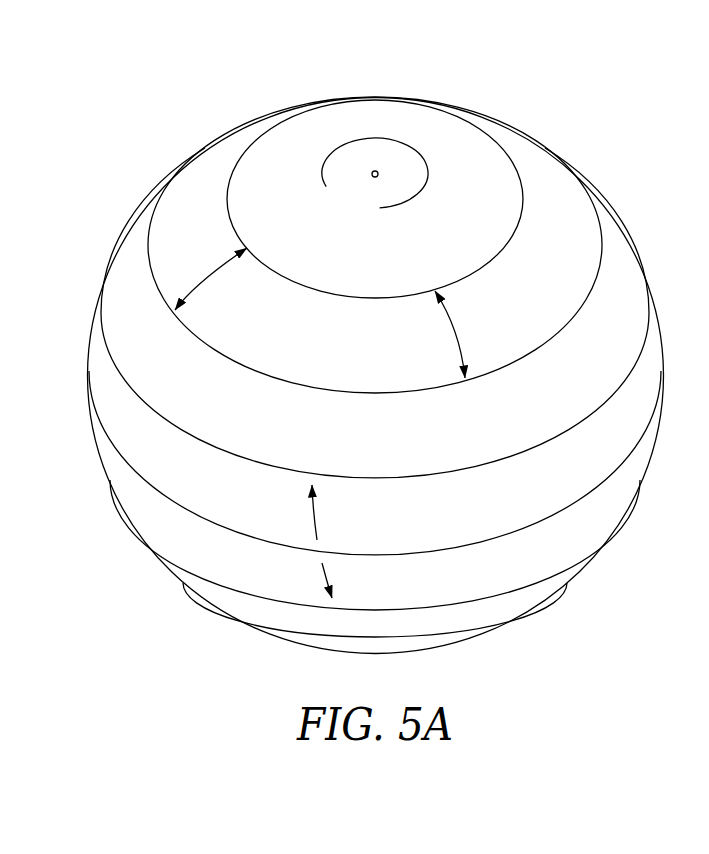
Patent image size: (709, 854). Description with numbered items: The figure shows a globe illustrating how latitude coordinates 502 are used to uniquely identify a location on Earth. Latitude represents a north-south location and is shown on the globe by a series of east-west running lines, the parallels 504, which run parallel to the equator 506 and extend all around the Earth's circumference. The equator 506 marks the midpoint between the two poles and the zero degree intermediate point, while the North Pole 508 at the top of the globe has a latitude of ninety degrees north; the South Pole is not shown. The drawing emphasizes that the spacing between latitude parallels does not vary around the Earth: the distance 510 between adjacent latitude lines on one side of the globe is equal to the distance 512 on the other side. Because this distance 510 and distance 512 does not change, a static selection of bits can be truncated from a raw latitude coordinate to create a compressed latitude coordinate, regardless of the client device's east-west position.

The latitude coordinates 502 is at (633, 73).
The parallels 504 is at (132, 247).
The equator 506 is at (623, 462).
The North Pole 508 is at (375, 170).
The distance 510 is at (458, 330).
The distance 512 is at (206, 278).